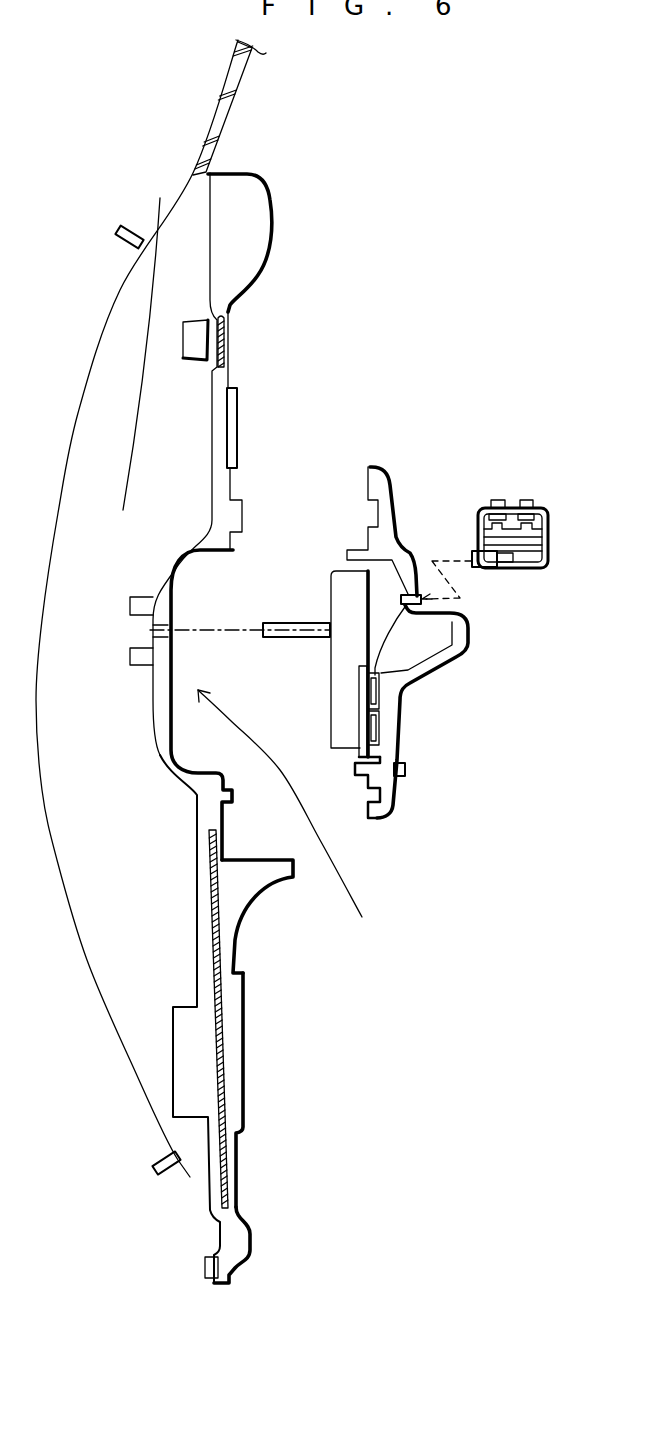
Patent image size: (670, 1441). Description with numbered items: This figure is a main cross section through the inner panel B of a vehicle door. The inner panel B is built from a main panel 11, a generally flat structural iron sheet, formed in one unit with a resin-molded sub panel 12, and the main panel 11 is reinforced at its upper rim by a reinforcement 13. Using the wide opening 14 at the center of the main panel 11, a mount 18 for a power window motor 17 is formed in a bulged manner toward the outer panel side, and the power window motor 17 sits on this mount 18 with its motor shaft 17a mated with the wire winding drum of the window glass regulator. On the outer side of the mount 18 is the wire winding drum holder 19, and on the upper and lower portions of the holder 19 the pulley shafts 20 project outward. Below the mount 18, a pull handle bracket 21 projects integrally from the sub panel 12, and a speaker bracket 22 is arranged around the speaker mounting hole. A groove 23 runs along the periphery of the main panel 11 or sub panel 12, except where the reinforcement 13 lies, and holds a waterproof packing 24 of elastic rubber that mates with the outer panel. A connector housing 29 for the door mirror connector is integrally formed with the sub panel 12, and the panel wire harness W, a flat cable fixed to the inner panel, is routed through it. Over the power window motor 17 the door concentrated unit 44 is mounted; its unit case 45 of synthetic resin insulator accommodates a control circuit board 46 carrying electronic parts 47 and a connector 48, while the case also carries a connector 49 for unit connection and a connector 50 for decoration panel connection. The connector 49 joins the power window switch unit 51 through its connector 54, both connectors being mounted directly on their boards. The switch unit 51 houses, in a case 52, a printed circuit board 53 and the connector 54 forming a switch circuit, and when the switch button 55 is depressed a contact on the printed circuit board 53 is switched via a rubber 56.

The inner panel B is at (181, 110).
The main panel 11 is at (220, 350).
The sub panel 12 is at (210, 437).
The reinforcement 13 is at (263, 230).
The wide opening 14 is at (291, 818).
The power window motor 17 is at (328, 587).
The motor shaft 17a is at (300, 623).
The mount 18 is at (173, 738).
The wire winding drum holder 19 is at (128, 633).
The pulley shafts 20 is at (117, 238).
The pull handle bracket 21 is at (295, 867).
The speaker bracket 22 is at (250, 1050).
The groove 23 is at (228, 1275).
The waterproof packing 24 is at (205, 1265).
The connector housing 29 is at (183, 342).
The panel wire harness W is at (237, 418).
The door concentrated unit 44 is at (351, 504).
The unit case 45 is at (377, 820).
The control circuit board 46 is at (360, 710).
The electronic parts 47 is at (377, 728).
The connector 48 is at (377, 693).
The connector 49 is at (417, 593).
The connector 50 is at (404, 775).
The power window switch unit 51 is at (531, 521).
The case 52 is at (480, 517).
The printed circuit board 53 is at (548, 548).
The connector 54 is at (485, 567).
The switch button 55 is at (522, 500).
The rubber 56 is at (548, 528).